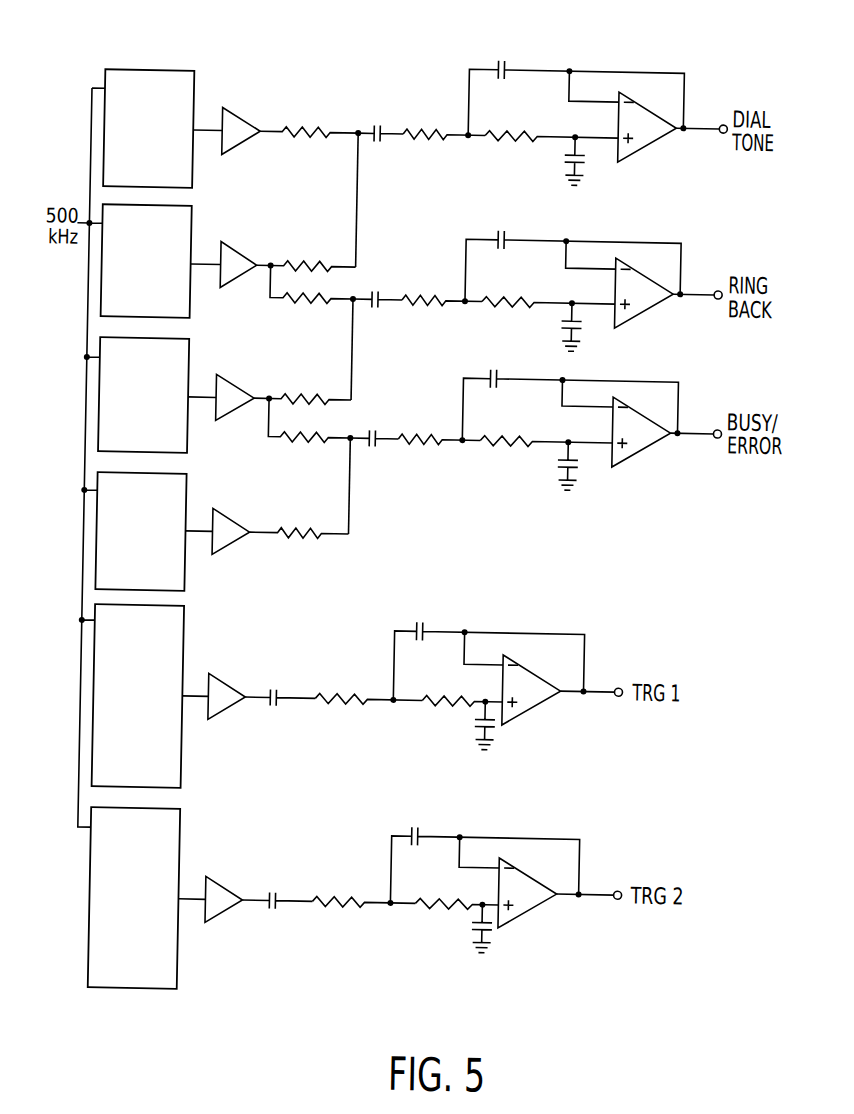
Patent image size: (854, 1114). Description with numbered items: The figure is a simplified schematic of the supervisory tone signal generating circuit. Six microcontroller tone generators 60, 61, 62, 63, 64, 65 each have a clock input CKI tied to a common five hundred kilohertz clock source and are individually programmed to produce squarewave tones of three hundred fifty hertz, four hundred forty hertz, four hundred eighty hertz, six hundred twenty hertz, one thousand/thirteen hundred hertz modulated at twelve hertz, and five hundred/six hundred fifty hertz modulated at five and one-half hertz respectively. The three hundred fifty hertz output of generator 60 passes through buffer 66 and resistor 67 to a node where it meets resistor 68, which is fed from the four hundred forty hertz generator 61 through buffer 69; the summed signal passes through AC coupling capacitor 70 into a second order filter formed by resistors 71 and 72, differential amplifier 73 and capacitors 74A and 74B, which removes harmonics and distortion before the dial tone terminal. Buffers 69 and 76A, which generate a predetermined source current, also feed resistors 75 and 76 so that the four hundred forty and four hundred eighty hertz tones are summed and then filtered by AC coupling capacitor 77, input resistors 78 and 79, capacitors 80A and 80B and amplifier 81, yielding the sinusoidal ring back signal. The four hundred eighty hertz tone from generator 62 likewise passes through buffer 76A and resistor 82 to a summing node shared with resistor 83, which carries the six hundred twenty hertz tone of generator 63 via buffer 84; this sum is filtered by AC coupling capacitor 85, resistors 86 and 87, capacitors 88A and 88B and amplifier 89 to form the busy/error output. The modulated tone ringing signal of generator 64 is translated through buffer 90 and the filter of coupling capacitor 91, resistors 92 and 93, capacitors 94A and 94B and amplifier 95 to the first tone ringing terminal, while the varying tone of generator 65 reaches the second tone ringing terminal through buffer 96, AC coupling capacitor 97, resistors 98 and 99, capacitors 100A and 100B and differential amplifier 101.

The 350 hertz tone generator 60 is at (195, 95).
The 440 hertz tone generator 61 is at (198, 229).
The 480 hertz tone generator 62 is at (196, 362).
The 620 hertz tone generator 63 is at (198, 495).
The 1000/1300 hertz tone generator 64 is at (200, 630).
The 500/650 hertz tone generator 65 is at (202, 830).
The buffer 66 is at (239, 109).
The resistor 67 is at (304, 122).
The resistor 68 is at (308, 256).
The buffer 69 is at (244, 246).
The AC coupling capacitor 70 is at (379, 118).
The resistor 71 is at (415, 120).
The resistor 72 is at (514, 120).
The differential amplifier 73 is at (651, 146).
The capacitor 74A is at (501, 54).
The capacitor 74B is at (566, 153).
The resistor 75 is at (308, 305).
The resistor 76 is at (314, 388).
The buffer amplifier 76A is at (238, 380).
The AC coupling capacitor 77 is at (396, 266).
The input resistor 78 is at (422, 288).
The input resistor 79 is at (516, 286).
The capacitor 80A is at (504, 231).
The capacitor 80B is at (566, 322).
The amplifier 81 is at (651, 314).
The resistor 82 is at (311, 440).
The resistor 83 is at (314, 524).
The buffer 84 is at (236, 518).
The AC coupling capacitor 85 is at (385, 426).
The resistor 86 is at (421, 428).
The resistor 87 is at (515, 427).
The capacitor 88A is at (496, 364).
The capacitor 88B is at (564, 457).
The amplifier 89 is at (648, 449).
The buffer 90 is at (236, 676).
The coupling capacitor 91 is at (291, 686).
The resistor 92 is at (351, 689).
The resistor 93 is at (453, 688).
The capacitor 94A is at (435, 622).
The capacitor 94B is at (487, 721).
The amplifier 95 is at (553, 696).
The buffer 96 is at (238, 876).
The AC coupling capacitor 97 is at (291, 887).
The resistor 98 is at (356, 890).
The resistor 99 is at (451, 879).
The capacitor 100A is at (434, 826).
The capacitor 100B is at (488, 922).
The differential amplifier 101 is at (552, 899).